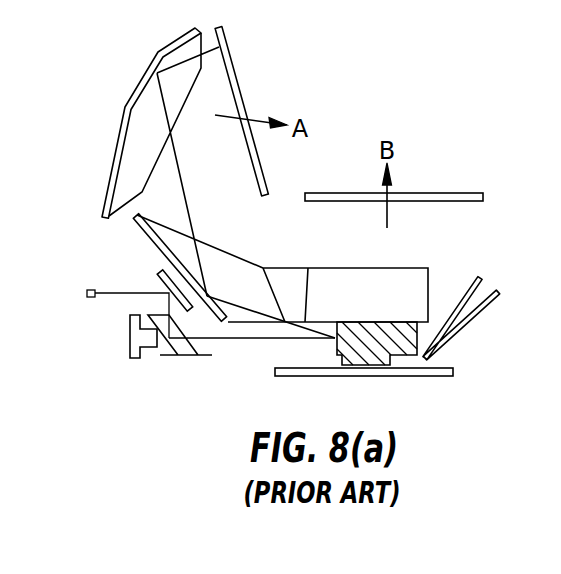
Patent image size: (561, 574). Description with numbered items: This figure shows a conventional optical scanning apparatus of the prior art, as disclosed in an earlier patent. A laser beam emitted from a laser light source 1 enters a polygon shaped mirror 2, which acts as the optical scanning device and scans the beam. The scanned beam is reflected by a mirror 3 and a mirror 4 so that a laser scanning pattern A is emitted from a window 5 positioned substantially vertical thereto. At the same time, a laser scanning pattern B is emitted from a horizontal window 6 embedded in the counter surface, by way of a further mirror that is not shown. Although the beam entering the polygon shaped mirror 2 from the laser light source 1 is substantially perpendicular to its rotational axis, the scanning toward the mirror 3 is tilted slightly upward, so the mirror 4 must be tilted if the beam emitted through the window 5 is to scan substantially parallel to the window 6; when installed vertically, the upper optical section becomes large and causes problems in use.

The laser light source 1 is at (91, 298).
The polygon shaped mirror 2 is at (335, 350).
The mirror 3 is at (148, 241).
The mirror 4 is at (114, 156).
The window 5 is at (237, 74).
The horizontal window 6 is at (467, 192).